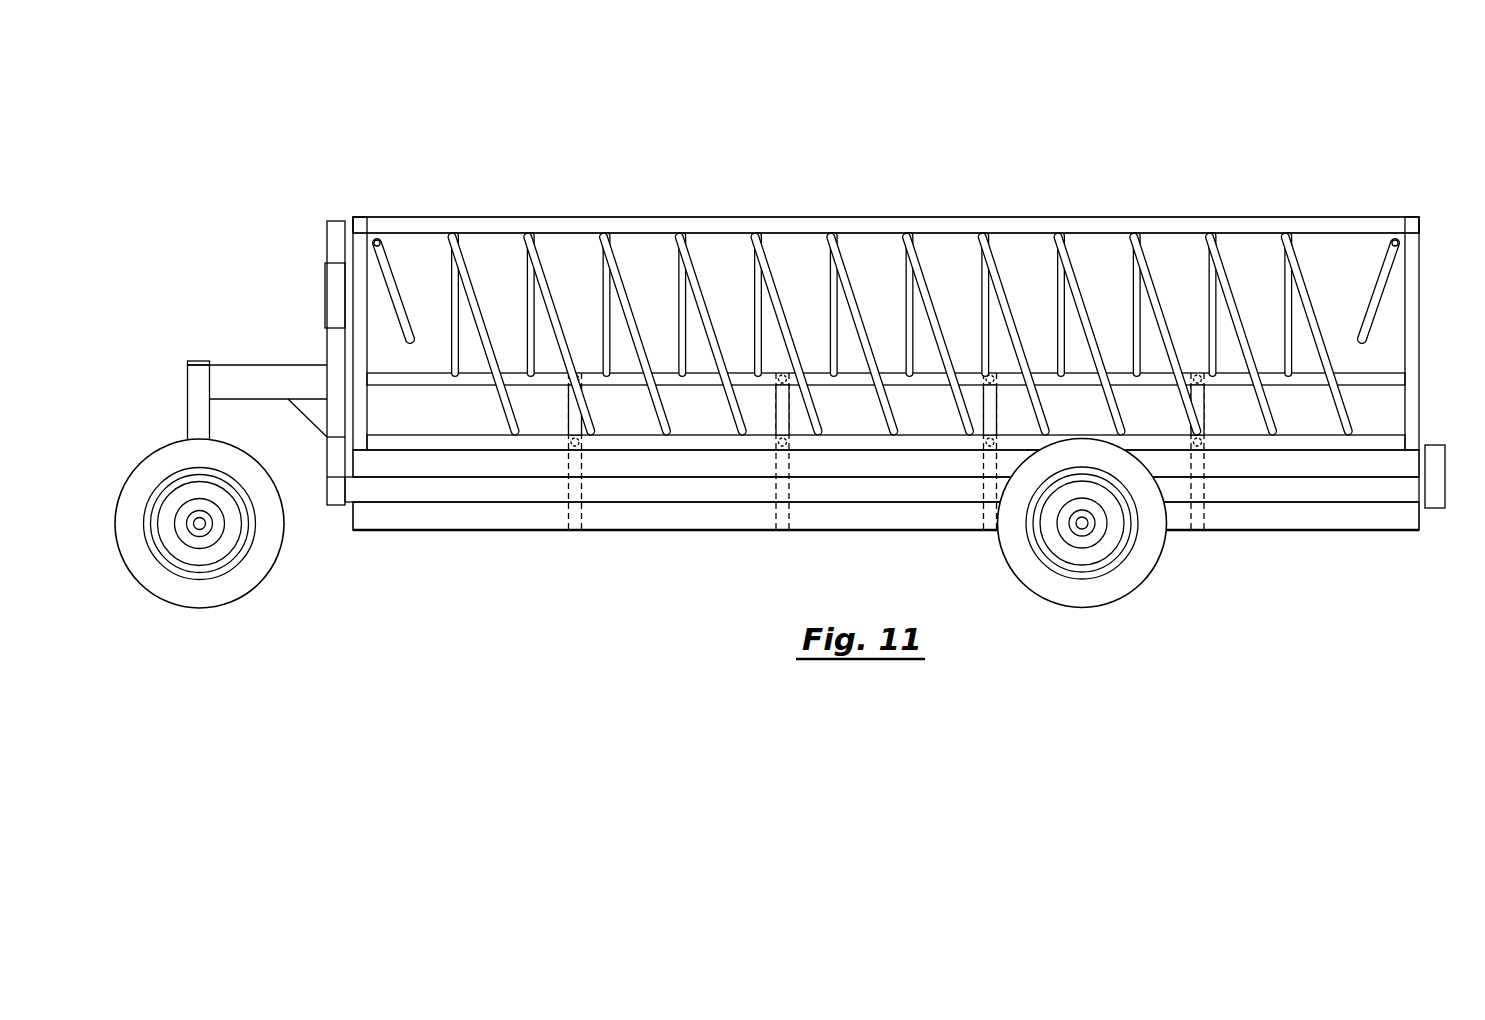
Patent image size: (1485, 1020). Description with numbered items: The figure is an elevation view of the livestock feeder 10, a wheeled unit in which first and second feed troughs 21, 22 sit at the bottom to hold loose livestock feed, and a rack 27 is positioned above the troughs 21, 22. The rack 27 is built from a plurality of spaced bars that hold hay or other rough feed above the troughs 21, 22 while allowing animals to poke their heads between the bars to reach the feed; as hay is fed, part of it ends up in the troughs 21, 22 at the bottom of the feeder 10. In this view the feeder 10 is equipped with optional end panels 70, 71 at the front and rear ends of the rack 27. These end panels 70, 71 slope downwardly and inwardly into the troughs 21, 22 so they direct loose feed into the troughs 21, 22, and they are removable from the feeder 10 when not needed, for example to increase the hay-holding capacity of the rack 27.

The livestock feeder 10 is at (294, 215).
The first feed trough 21 is at (497, 520).
The second feed trough 22 is at (886, 516).
The rack 27 is at (1163, 226).
The end panel 70 is at (390, 277).
The end panel 71 is at (1378, 280).